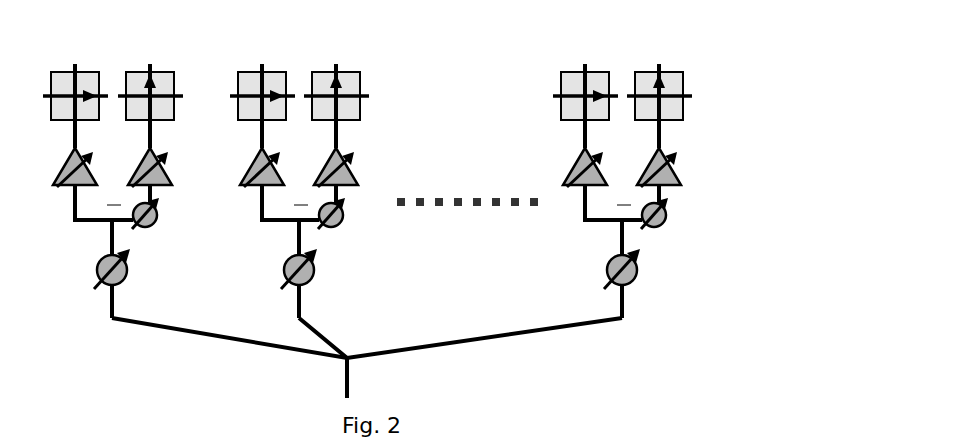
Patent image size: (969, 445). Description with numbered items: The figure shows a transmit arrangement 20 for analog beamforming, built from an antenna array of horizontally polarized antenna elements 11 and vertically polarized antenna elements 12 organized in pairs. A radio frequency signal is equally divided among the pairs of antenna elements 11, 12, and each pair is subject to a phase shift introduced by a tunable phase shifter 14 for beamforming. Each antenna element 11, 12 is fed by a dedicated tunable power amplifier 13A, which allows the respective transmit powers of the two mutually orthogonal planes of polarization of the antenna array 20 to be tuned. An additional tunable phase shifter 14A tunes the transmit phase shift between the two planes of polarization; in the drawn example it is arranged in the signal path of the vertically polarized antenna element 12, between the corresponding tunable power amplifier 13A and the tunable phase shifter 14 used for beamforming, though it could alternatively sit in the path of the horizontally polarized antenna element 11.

The horizontally polarized antenna element 11 is at (84, 70).
The vertically polarized antenna element 12 is at (160, 70).
The tunable power amplifier 13A is at (674, 166).
The tunable phase shifter 14A is at (668, 211).
The tunable phase shifter 14 is at (640, 266).
The transmit arrangement 20 is at (815, 183).